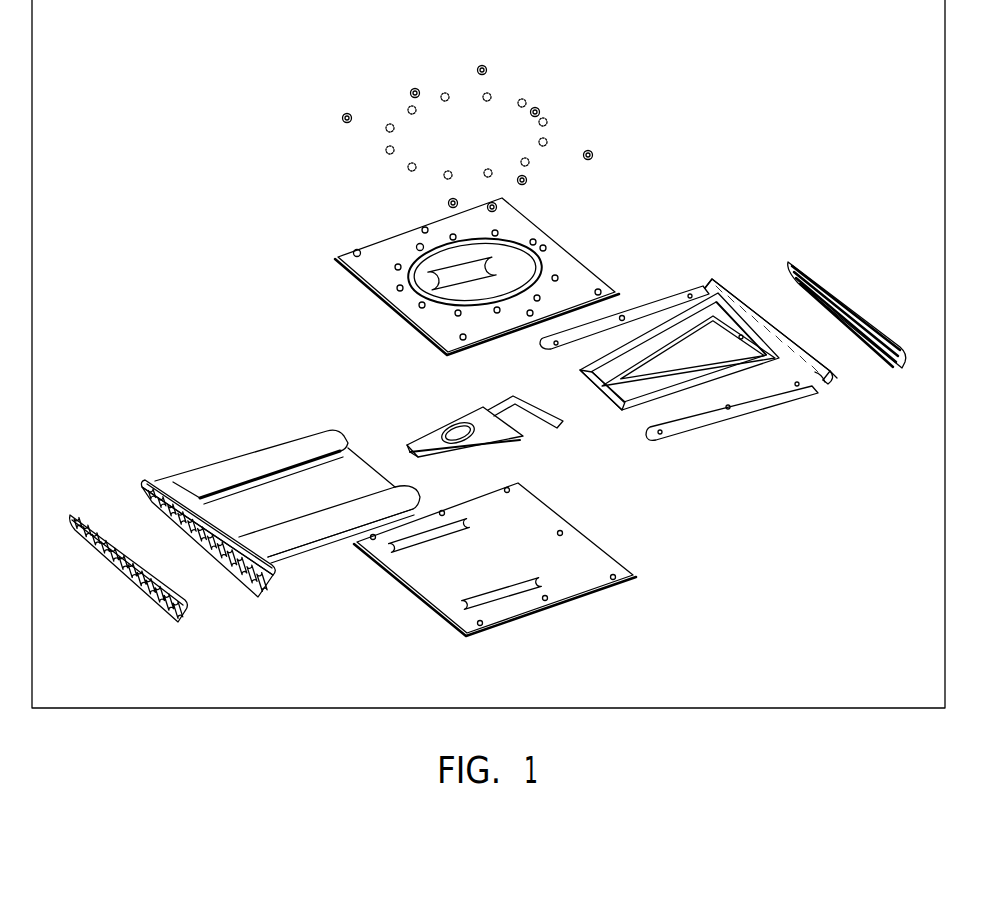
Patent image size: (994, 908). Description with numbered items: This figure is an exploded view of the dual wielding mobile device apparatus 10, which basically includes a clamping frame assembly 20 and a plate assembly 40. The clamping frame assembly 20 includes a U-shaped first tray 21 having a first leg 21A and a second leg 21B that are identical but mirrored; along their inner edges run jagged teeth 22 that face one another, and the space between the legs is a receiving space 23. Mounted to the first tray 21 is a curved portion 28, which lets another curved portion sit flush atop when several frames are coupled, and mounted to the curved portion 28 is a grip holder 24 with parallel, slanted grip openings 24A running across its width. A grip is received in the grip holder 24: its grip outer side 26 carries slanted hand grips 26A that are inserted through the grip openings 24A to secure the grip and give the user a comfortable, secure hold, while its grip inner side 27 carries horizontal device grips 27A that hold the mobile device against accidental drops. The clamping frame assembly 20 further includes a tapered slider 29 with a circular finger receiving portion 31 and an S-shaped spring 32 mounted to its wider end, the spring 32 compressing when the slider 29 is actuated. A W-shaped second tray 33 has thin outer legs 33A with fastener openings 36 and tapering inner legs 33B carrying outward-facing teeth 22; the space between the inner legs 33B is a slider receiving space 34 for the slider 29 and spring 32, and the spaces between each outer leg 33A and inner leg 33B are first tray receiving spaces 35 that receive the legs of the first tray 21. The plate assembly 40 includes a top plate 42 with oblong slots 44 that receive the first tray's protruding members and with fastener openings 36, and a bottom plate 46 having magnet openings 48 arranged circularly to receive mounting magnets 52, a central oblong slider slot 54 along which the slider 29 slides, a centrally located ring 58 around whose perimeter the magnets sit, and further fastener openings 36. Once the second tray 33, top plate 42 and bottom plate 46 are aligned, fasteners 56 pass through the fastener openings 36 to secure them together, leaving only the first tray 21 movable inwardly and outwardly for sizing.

The dual wielding mobile device apparatus 10 is at (185, 186).
The clamping frame assembly 20 is at (272, 441).
The first tray 21 is at (291, 556).
The first leg 21A is at (205, 478).
The second leg 21B is at (336, 522).
The teeth 22 is at (271, 479).
The receiving space 23 is at (353, 453).
The grip holder 24 is at (254, 592).
The grip openings 24A is at (226, 567).
The grip outer side 26 is at (170, 621).
The hand grips 26A is at (142, 591).
The grip inner side 27 is at (904, 367).
The device grips 27A is at (800, 267).
The curved portion 28 is at (152, 478).
The slider 29 is at (415, 448).
The finger receiving portion 31 is at (462, 437).
The spring 32 is at (541, 435).
The second tray 33 is at (776, 397).
The outer legs 33A is at (544, 346).
The inner legs 33B is at (606, 374).
The slider receiving space 34 is at (716, 351).
The first tray receiving space 35 is at (581, 364).
The fastener openings 36 is at (355, 250).
The plate assembly 40 is at (358, 283).
The top plate 42 is at (590, 560).
The slots 44 is at (486, 602).
The bottom plate 46 is at (390, 261).
The magnet openings 48 is at (419, 244).
The mounting magnets 52 is at (444, 94).
The slider slot 54 is at (446, 287).
The fasteners 56 is at (587, 152).
The ring 58 is at (542, 262).